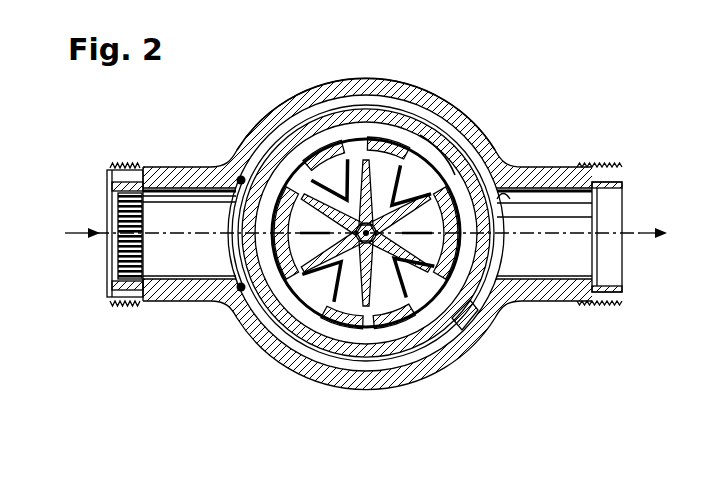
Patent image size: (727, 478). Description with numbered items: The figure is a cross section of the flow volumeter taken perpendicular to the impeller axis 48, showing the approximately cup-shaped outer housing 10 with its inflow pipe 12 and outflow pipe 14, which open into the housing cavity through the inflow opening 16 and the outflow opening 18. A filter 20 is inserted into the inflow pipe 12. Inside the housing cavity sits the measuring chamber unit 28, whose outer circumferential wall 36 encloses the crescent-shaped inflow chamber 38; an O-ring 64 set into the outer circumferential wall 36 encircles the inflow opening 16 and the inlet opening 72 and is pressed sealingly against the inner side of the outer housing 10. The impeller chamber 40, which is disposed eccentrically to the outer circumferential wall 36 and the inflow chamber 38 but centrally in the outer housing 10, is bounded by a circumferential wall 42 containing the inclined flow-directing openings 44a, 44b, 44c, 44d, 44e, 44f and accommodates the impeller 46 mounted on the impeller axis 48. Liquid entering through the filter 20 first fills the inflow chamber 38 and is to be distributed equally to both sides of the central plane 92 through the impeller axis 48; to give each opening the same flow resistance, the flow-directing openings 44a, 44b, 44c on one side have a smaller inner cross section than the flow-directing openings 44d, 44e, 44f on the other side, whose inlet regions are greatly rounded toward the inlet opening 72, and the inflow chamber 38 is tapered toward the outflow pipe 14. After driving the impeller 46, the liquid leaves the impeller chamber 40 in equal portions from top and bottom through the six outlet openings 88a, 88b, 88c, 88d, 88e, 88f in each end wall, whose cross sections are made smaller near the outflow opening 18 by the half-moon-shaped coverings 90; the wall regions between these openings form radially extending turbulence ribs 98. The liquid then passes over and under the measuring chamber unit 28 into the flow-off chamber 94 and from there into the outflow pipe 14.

The outer housing 10 is at (450, 98).
The inflow pipe 12 is at (168, 300).
The outflow pipe 14 is at (563, 293).
The inflow opening 16 is at (205, 205).
The outflow opening 18 is at (503, 195).
The filter 20 is at (108, 204).
The measuring chamber unit 28 is at (460, 333).
The outer circumferential wall 36 is at (395, 117).
The inflow chamber 38 is at (322, 117).
The impeller chamber 40 is at (420, 105).
The circumferential wall 42 is at (245, 340).
The flow-directing opening 44a is at (290, 345).
The flow-directing opening 44b is at (350, 342).
The flow-directing opening 44c is at (425, 345).
The flow-directing opening 44d is at (262, 135).
The flow-directing opening 44e is at (350, 135).
The flow-directing opening 44f is at (433, 140).
The impeller 46 is at (322, 345).
The impeller axis 48 is at (455, 242).
The O-ring 64 is at (235, 302).
The inlet opening 72 is at (229, 258).
The outlet opening 88a is at (266, 335).
The outlet opening 88b is at (385, 345).
The outlet opening 88c is at (472, 273).
The outlet opening 88d is at (297, 117).
The outlet opening 88e is at (366, 135).
The outlet opening 88f is at (500, 192).
The half-moon-shaped covering 90 is at (452, 203).
The central plane 92 is at (645, 228).
The flow-off chamber 94 is at (499, 300).
The turbulence rib 98 is at (437, 320).